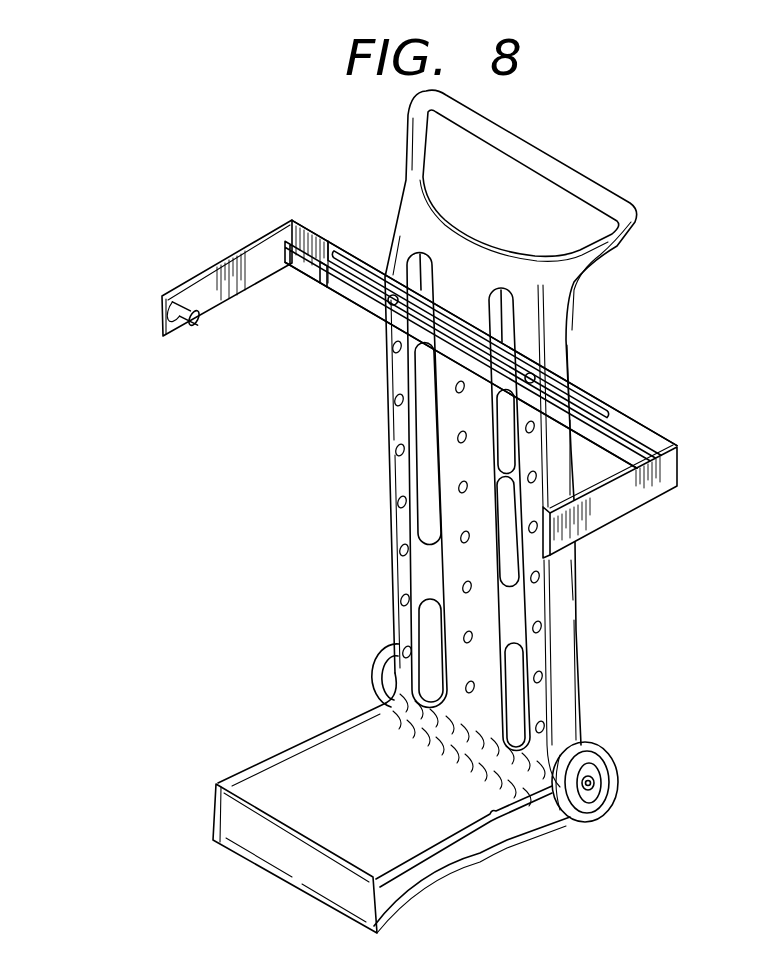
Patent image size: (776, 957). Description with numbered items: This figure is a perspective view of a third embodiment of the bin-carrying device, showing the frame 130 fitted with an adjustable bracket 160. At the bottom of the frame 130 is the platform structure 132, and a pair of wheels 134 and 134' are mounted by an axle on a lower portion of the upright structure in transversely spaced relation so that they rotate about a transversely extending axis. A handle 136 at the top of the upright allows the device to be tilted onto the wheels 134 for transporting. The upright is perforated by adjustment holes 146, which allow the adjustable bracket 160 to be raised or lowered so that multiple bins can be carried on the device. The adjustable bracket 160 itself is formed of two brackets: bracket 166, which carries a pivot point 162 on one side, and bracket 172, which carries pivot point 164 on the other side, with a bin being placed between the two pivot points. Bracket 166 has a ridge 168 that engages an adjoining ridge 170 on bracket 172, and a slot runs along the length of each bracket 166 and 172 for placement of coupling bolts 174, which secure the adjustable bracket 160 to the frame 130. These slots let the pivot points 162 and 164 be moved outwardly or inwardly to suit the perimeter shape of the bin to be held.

The frame 130 is at (578, 613).
The platform structure 132 is at (218, 822).
The wheel 134 is at (631, 775).
The wheel 134' is at (328, 663).
The handle 136 is at (523, 138).
The holes 146 is at (402, 550).
The adjustable bracket 160 is at (597, 381).
The pivot point 162 is at (178, 312).
The pivot point 164 is at (550, 486).
The bracket 166 is at (318, 233).
The ridge 168 is at (297, 270).
The ridge 170 is at (613, 428).
The bracket 172 is at (672, 480).
The coupling bolts 174 is at (527, 382).